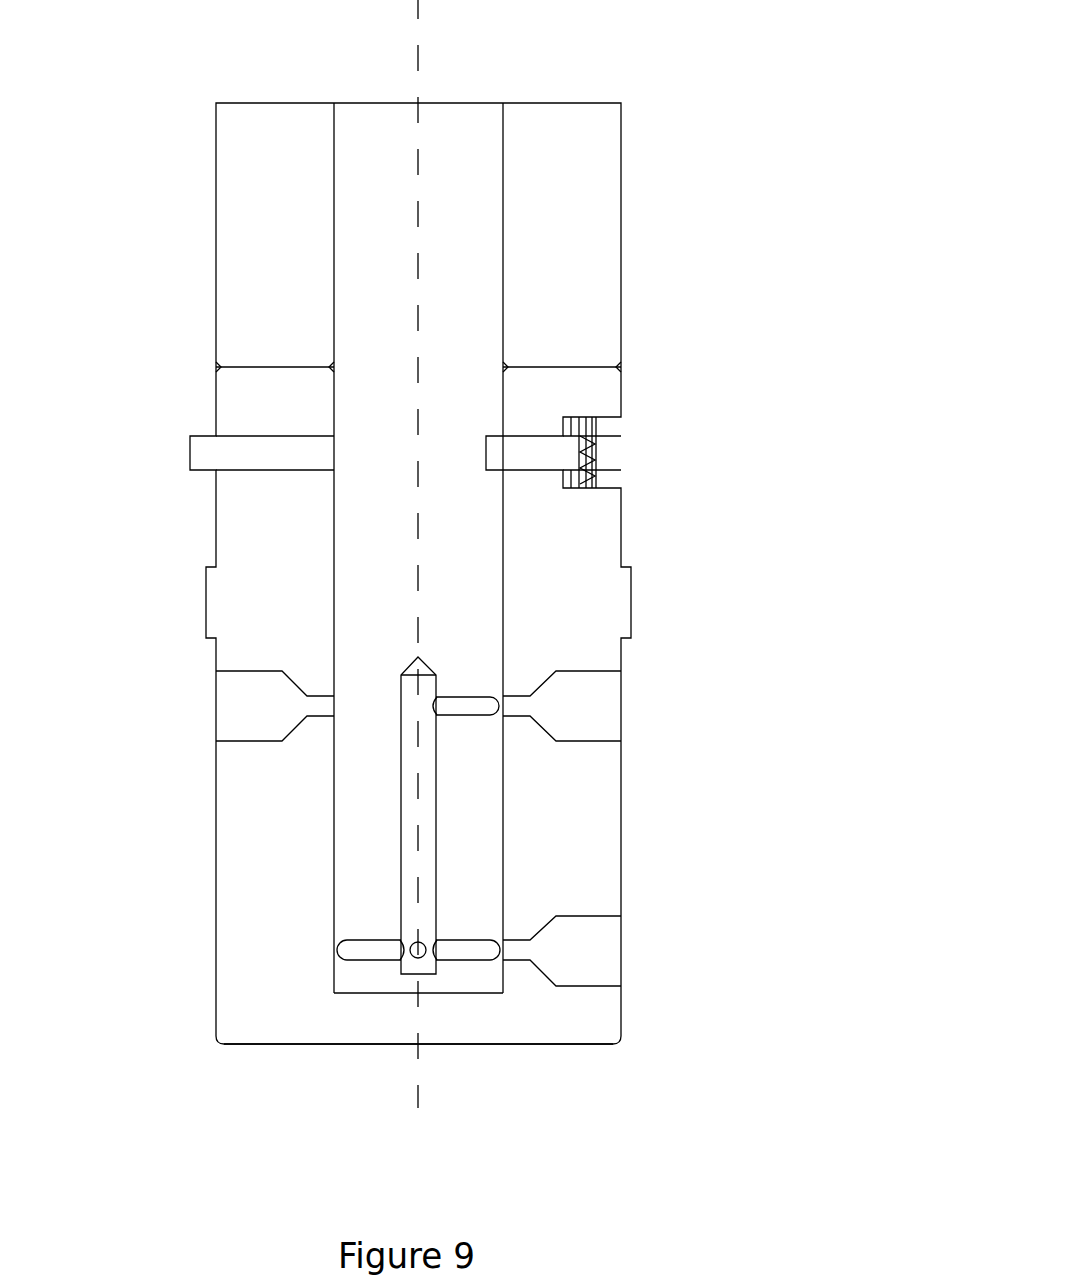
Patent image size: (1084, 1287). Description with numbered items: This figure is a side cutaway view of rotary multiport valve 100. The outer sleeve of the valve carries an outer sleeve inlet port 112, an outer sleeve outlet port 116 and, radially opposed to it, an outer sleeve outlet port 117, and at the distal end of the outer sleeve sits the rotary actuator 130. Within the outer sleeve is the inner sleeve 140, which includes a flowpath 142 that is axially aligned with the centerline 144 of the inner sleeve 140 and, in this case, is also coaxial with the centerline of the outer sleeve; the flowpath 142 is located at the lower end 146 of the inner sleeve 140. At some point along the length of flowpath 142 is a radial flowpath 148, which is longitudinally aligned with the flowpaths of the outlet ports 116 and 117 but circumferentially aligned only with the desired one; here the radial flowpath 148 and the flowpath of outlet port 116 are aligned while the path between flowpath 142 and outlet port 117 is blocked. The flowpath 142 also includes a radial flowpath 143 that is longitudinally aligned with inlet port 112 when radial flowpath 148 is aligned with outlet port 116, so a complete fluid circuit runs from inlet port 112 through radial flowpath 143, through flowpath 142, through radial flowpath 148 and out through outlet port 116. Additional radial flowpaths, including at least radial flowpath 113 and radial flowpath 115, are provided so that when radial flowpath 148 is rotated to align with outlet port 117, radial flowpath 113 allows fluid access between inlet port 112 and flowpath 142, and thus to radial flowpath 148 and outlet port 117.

The rotary multiport valve 100 is at (671, 313).
The outer sleeve inlet port 112 is at (578, 948).
The radial flowpath 113 is at (372, 950).
The radial flowpath 115 is at (415, 955).
The outer sleeve outlet port 116 is at (578, 708).
The outer sleeve outlet port 117 is at (240, 688).
The rotary actuator 130 is at (260, 252).
The inner sleeve 140 is at (480, 533).
The flowpath 142 is at (423, 813).
The radial flowpath 143 is at (458, 947).
The centerline 144 is at (418, 58).
The lower end 146 is at (220, 1041).
The radial flowpath 148 is at (472, 703).